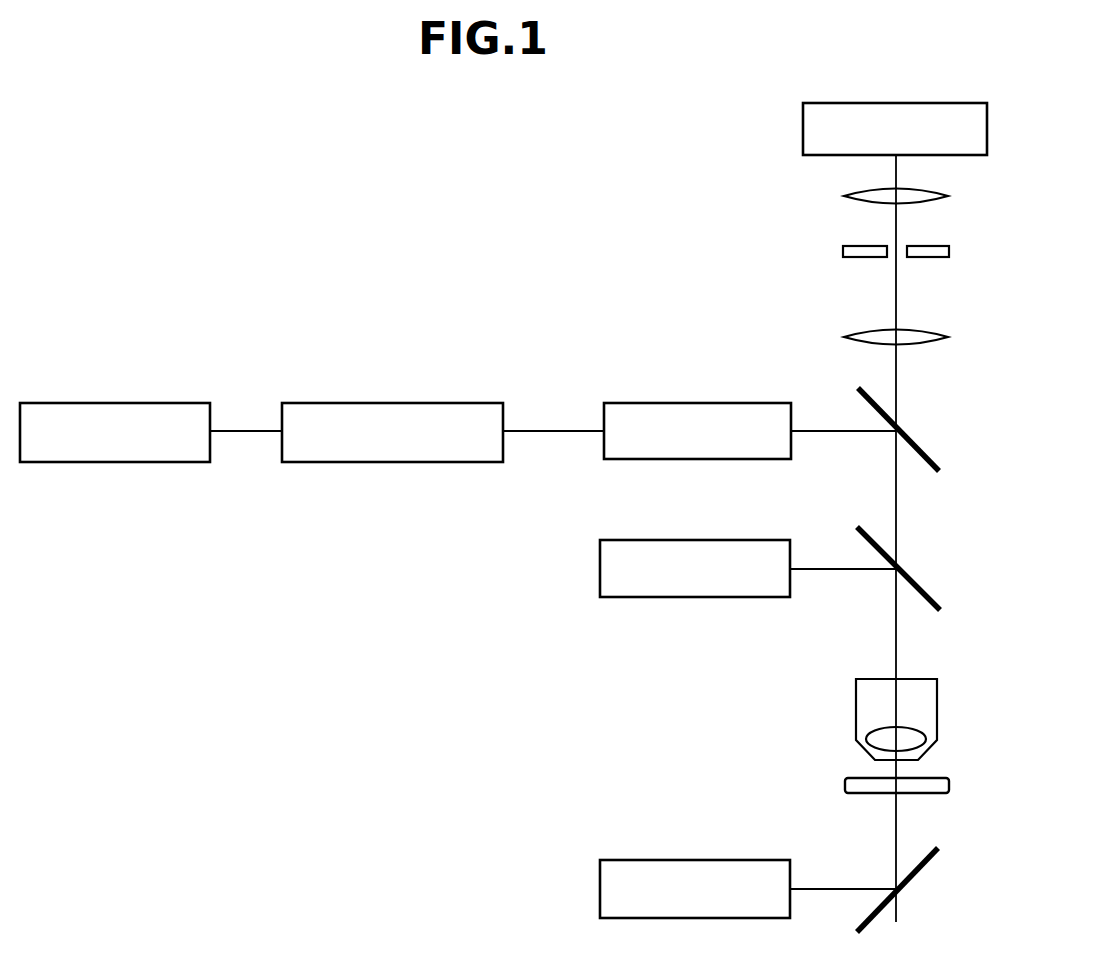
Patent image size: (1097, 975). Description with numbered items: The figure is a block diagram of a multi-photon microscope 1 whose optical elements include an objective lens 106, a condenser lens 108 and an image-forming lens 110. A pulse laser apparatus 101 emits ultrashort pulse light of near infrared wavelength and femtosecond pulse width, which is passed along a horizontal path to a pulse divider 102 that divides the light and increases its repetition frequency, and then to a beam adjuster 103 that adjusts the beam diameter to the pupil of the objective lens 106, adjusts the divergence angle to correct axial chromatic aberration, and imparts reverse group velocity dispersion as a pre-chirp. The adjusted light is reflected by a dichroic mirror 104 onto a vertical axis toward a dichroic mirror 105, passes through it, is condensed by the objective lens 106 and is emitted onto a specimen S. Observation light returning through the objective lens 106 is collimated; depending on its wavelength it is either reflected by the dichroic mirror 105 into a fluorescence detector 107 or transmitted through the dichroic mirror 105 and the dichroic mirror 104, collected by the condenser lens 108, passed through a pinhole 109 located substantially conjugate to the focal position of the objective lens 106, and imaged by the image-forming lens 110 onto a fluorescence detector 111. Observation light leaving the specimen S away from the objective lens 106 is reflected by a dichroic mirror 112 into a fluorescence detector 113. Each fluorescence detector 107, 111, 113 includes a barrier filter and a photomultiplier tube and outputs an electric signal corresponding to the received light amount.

The multi-photon microscope 1 is at (400, 262).
The pulse laser apparatus 101 is at (135, 403).
The pulse divider 102 is at (425, 403).
The beam adjuster 103 is at (708, 403).
The dichroic mirror 104 is at (917, 443).
The dichroic mirror 105 is at (918, 585).
The objective lens 106 is at (937, 707).
The fluorescence detector 107 is at (704, 540).
The condenser lens 108 is at (948, 337).
The pinhole 109 is at (949, 251).
The image-forming lens 110 is at (948, 196).
The fluorescence detector 111 is at (987, 128).
The dichroic mirror 112 is at (930, 866).
The fluorescence detector 113 is at (697, 860).
The specimen S is at (949, 785).